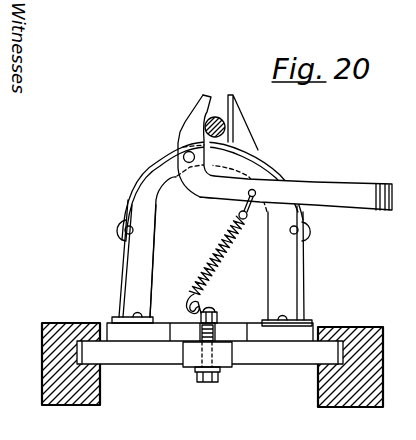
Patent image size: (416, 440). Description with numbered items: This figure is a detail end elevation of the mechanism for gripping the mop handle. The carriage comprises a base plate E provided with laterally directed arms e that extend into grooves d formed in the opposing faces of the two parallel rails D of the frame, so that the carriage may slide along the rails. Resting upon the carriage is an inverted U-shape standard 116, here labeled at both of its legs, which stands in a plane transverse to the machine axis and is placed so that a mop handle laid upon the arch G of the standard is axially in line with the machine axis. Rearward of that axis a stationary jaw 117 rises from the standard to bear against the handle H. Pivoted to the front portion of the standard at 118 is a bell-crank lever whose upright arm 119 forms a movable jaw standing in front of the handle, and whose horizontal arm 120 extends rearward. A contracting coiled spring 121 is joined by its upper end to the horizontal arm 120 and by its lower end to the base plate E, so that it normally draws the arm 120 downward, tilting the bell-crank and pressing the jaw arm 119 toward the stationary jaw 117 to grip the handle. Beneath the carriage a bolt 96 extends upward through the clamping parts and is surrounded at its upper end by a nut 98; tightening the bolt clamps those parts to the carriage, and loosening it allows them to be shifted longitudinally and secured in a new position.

The upright arm 119 is at (200, 108).
The horizontal arm 120 is at (356, 187).
The pivot 118 is at (185, 155).
The stationary jaw 117 is at (235, 104).
The pin H is at (226, 124).
The contracting coiled spring 121 is at (223, 233).
The inverted U-shape standard 116 is at (133, 258).
The arch frame G is at (212, 229).
The nut 98 is at (219, 311).
The bolt 96 is at (210, 384).
The base plate E is at (210, 353).
The laterally directed arm e is at (87, 353).
The groove d is at (98, 365).
The rail D is at (52, 397).